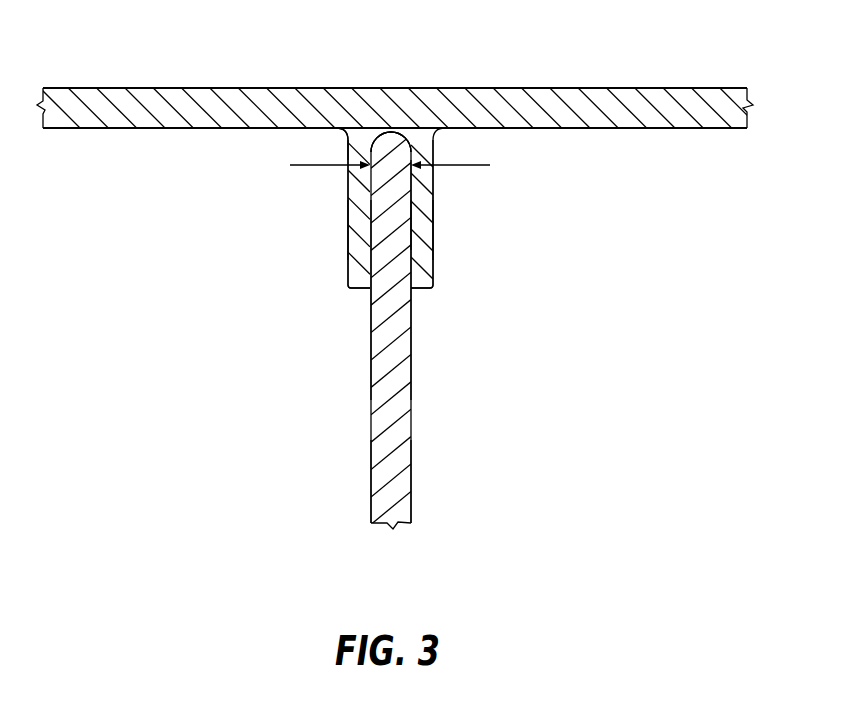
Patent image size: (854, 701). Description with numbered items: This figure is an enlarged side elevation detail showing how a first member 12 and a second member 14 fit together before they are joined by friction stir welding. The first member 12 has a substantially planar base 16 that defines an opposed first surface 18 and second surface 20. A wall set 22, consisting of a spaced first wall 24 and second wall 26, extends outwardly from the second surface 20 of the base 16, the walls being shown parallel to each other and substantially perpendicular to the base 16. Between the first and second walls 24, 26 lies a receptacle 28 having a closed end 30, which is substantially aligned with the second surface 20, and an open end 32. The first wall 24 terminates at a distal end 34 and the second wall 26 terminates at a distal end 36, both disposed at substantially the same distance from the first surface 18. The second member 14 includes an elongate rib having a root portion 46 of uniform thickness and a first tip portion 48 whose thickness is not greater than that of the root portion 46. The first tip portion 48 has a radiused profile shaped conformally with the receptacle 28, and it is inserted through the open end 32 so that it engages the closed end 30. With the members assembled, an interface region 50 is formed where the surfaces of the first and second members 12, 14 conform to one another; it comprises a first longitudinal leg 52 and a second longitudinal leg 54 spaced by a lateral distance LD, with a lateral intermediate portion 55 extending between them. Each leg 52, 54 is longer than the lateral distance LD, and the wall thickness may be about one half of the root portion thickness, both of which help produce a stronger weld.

The first member 12 is at (672, 78).
The second member 14 is at (360, 464).
The base 16 is at (573, 90).
The first surface 18 is at (110, 88).
The second surface 20 is at (127, 128).
The wall set 22 is at (445, 282).
The first wall 24 is at (348, 258).
The second wall 26 is at (433, 257).
The receptacle 28 is at (383, 290).
The closed end 30 is at (378, 140).
The open end 32 is at (407, 288).
The distal end 34 is at (356, 290).
The distal end 36 is at (420, 292).
The root portion 46 is at (401, 488).
The first tip portion 48 is at (403, 150).
The interface region 50 is at (423, 203).
The first longitudinal leg 52 is at (348, 228).
The second longitudinal leg 54 is at (433, 230).
The lateral intermediate portion 55 is at (348, 151).
The lateral distance LD is at (405, 165).